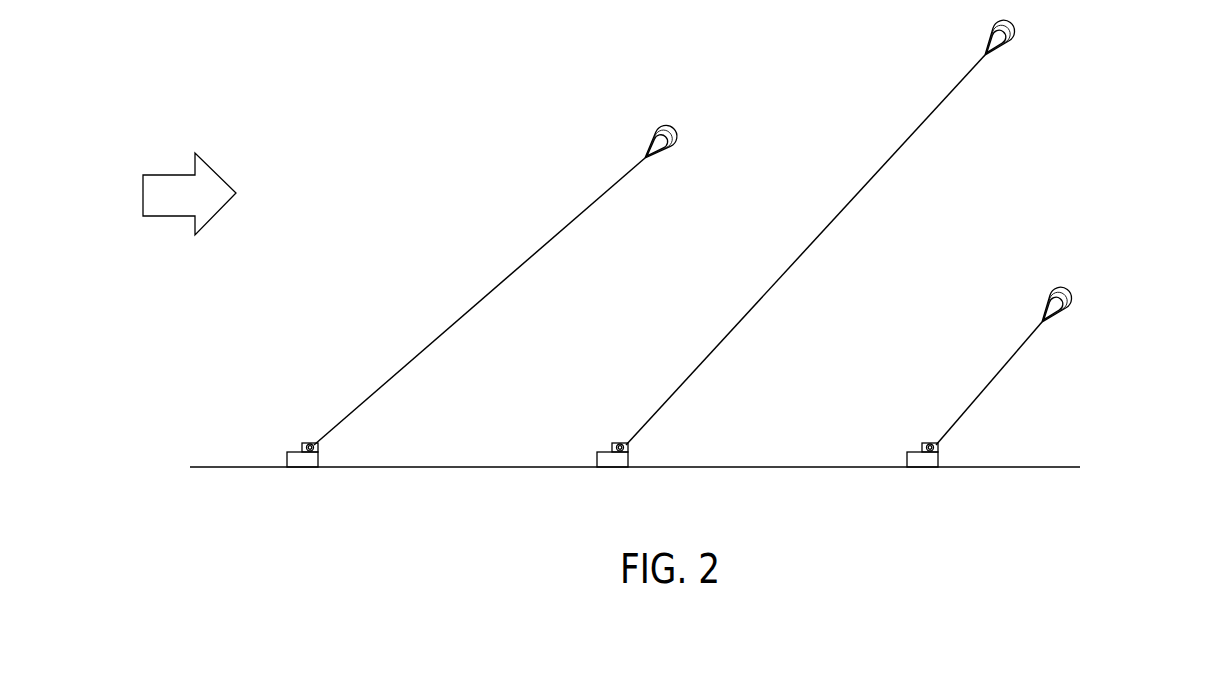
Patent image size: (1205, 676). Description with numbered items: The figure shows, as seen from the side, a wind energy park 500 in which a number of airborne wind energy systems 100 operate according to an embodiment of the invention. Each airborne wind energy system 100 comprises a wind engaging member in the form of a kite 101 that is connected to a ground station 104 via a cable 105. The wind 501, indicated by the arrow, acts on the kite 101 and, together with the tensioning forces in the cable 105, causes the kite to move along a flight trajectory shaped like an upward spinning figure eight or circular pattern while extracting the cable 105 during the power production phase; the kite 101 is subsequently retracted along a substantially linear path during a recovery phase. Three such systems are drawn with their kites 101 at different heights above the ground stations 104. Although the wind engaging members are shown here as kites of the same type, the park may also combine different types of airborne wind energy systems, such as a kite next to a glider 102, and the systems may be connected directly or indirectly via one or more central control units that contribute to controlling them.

The wind energy park 500 is at (338, 66).
The wind 501 is at (165, 183).
The airborne wind energy system 100 is at (418, 352).
The kite 101 is at (1020, 30).
The kite / aerial vehicle 102 is at (648, 124).
The ground station 104 is at (308, 444).
The cable 105 is at (523, 258).